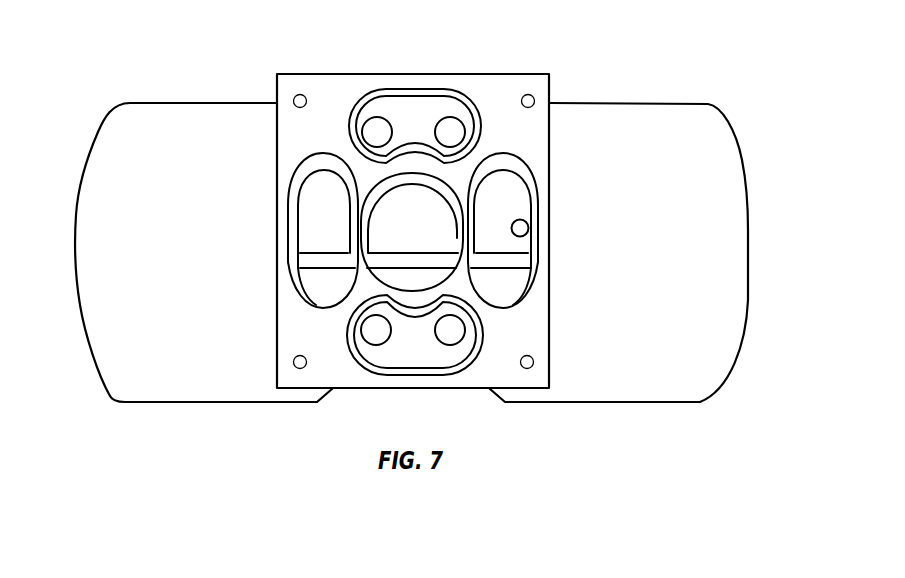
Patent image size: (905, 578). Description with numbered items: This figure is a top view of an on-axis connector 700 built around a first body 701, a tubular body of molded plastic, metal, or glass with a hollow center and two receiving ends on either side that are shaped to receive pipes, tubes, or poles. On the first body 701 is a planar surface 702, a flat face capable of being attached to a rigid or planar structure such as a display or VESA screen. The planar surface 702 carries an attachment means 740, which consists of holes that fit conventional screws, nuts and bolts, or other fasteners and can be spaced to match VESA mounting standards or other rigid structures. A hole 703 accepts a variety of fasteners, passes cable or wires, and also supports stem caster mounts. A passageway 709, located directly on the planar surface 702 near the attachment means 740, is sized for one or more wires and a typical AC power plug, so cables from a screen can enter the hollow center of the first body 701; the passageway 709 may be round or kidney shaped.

The on-axis connector 700 is at (53, 250).
The first body 701 is at (717, 178).
The planar surface 702 is at (500, 88).
The hole 703 is at (413, 112).
The passageway 709 is at (438, 238).
The attachment means 740 is at (302, 368).